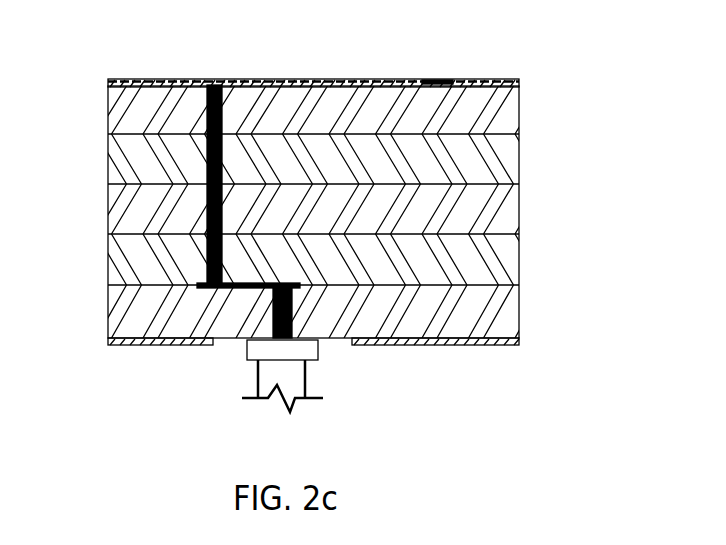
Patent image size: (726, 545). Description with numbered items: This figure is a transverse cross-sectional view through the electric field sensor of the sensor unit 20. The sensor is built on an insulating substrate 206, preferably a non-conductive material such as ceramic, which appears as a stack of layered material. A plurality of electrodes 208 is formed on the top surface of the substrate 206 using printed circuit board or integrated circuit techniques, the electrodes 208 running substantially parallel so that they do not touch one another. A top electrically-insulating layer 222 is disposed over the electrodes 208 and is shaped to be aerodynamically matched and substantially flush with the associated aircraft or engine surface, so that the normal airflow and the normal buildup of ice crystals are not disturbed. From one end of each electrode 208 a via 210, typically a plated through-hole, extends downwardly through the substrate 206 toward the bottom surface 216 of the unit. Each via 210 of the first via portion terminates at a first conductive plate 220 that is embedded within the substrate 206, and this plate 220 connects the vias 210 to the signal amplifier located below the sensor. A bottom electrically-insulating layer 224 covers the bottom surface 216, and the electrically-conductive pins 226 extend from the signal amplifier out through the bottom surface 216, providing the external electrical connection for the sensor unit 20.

The electronic device / substrate assembly 20 is at (638, 359).
The insulating substrate 206 is at (519, 166).
The electrodes 208 is at (165, 77).
The vias 210 is at (199, 206).
The bottom surface 216 is at (236, 350).
The first conductive plate 220 is at (233, 297).
The top electrically-insulating layer 222 is at (317, 384).
The bottom electrically-insulating layer 224 is at (303, 70).
The electrically-conductive pins 226 is at (385, 353).